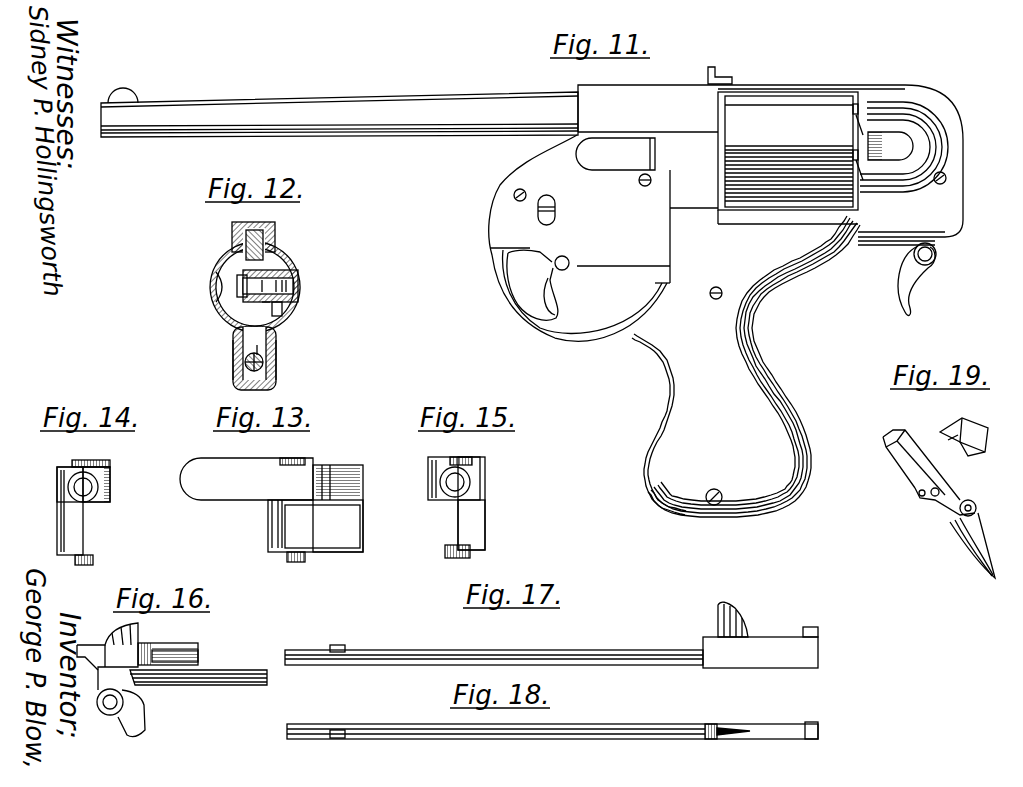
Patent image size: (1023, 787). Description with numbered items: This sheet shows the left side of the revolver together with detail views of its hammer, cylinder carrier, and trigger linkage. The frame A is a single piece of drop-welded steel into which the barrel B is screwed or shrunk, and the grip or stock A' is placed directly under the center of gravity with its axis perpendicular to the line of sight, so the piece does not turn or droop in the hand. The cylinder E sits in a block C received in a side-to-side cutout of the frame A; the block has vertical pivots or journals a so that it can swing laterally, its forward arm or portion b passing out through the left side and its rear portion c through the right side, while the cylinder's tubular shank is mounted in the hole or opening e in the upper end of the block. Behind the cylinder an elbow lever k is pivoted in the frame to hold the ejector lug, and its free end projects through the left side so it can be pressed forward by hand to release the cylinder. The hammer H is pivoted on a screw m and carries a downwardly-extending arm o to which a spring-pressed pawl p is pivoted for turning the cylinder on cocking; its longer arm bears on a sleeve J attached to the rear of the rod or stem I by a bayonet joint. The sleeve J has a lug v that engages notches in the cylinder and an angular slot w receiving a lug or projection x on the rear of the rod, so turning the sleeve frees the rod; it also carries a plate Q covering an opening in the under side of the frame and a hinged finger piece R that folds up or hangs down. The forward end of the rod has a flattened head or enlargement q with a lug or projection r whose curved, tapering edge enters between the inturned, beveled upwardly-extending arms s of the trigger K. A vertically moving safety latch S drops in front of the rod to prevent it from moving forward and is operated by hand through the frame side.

In FIG. 11, the barrel B is at (339, 100).
In FIG. 11, the frame A is at (726, 286).
In FIG. 12, the frame A is at (246, 306).
In FIG. 11, the grip or stock A' is at (746, 366).
In FIG. 11, the cylinder E is at (790, 151).
In FIG. 11, the elbow lever k is at (890, 132).
In FIG. 12, the elbow lever k is at (212, 296).
In FIG. 11, the forward arm or portion of block b is at (615, 154).
In FIG. 13, the forward arm or portion of block b is at (246, 479).
In FIG. 14, the forward arm or portion of block b is at (110, 487).
In FIG. 11, the safety latch S is at (555, 205).
In FIG. 11, the trigger K is at (538, 285).
In FIG. 19, the trigger K is at (939, 504).
In FIG. 11, the plate Q is at (886, 246).
In FIG. 12, the plate Q is at (270, 380).
In FIG. 16, the plate Q is at (198, 693).
In FIG. 11, the hinged or pivoted finger piece R is at (917, 279).
In FIG. 16, the hinged or pivoted finger piece R is at (132, 713).
In FIG. 12, the hammer H is at (264, 243).
In FIG. 12, the screw m is at (300, 282).
In FIG. 12, the spring-pressed pawl p is at (284, 312).
In FIG. 12, the hammer arm o is at (262, 306).
In FIG. 12, the lug or projection x is at (256, 350).
In FIG. 17, the lug or projection x is at (346, 634).
In FIG. 18, the lug or projection x is at (347, 718).
In FIG. 12, the angular slot w is at (266, 357).
In FIG. 16, the angular slot w is at (168, 660).
In FIG. 12, the sleeve J is at (240, 373).
In FIG. 16, the sleeve J is at (173, 650).
In FIG. 13, the vertical pivots or journals a is at (305, 460).
In FIG. 14, the vertical pivots or journals a is at (73, 460).
In FIG. 15, the vertical pivots or journals a is at (470, 457).
In FIG. 13, the block C is at (297, 508).
In FIG. 14, the block C is at (65, 511).
In FIG. 15, the block C is at (456, 503).
In FIG. 13, the rear portion of block c is at (322, 526).
In FIG. 15, the rear portion of block c is at (485, 527).
In FIG. 14, the hole or opening e is at (83, 487).
In FIG. 15, the hole or opening e is at (455, 482).
In FIG. 16, the lug v is at (107, 652).
In FIG. 17, the rod or stem I is at (494, 646).
In FIG. 18, the rod or stem I is at (552, 721).
In FIG. 17, the lug or projection r is at (733, 610).
In FIG. 18, the lug or projection r is at (731, 727).
In FIG. 17, the head or enlargement q is at (760, 647).
In FIG. 18, the head or enlargement q is at (796, 719).
In FIG. 19, the upwardly-extending arms of trigger s is at (883, 433).